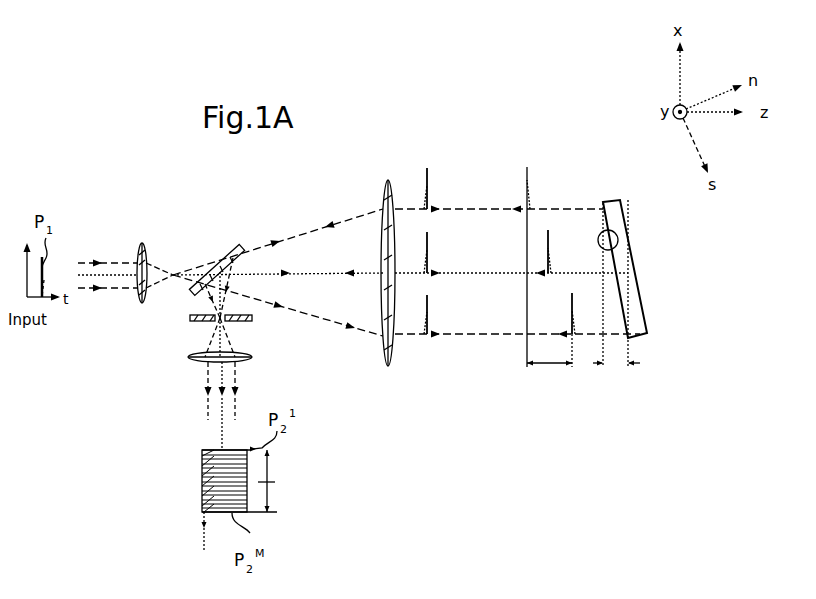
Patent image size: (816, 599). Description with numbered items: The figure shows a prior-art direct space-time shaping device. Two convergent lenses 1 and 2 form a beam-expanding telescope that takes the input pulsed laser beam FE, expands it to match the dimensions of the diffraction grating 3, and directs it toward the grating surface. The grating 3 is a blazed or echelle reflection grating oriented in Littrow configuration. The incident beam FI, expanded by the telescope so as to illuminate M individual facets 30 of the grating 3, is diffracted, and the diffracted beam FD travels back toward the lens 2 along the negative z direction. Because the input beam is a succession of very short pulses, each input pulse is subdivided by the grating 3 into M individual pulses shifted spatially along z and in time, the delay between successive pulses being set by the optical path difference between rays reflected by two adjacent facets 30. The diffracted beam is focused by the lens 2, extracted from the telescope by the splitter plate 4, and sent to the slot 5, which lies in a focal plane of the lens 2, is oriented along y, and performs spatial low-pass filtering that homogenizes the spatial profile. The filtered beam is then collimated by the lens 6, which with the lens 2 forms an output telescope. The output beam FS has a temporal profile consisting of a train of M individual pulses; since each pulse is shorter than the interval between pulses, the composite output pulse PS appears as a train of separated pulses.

The convergent lens 1 is at (147, 259).
The convergent lens 2 is at (383, 192).
The diffraction grating 3 is at (616, 197).
The splitter plate 4 is at (239, 246).
The slot 5 is at (190, 318).
The lens 6 is at (252, 357).
The individual facets 30 is at (593, 226).
The input pulsed laser beam FE is at (100, 246).
The incident beam FI is at (444, 188).
The diffracted beam FD is at (508, 190).
The output beam FS is at (196, 406).
The composite output pulse PS is at (193, 492).